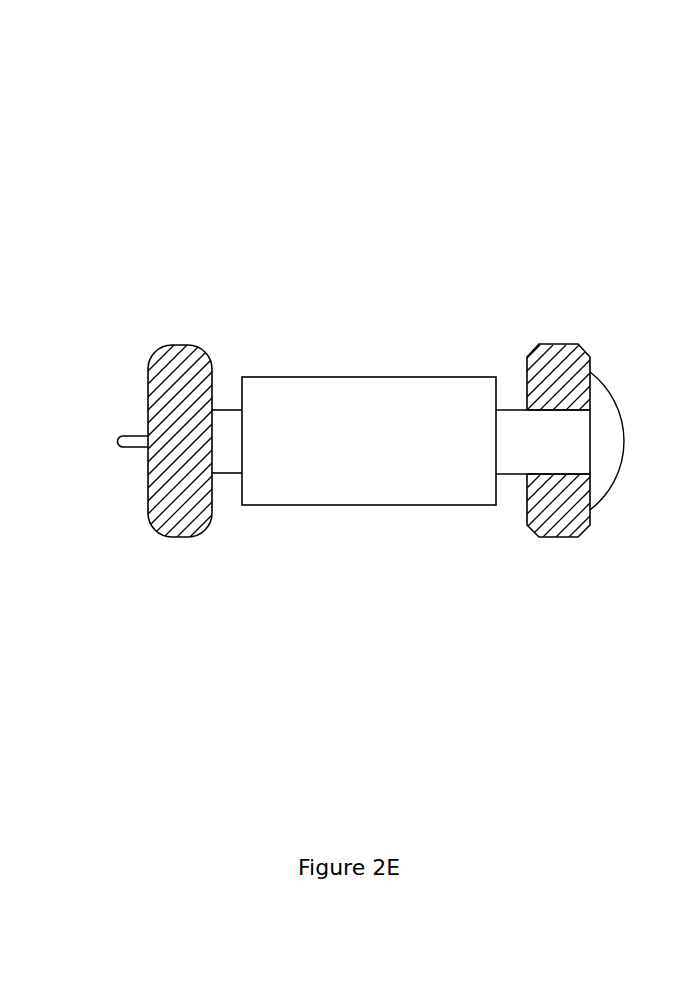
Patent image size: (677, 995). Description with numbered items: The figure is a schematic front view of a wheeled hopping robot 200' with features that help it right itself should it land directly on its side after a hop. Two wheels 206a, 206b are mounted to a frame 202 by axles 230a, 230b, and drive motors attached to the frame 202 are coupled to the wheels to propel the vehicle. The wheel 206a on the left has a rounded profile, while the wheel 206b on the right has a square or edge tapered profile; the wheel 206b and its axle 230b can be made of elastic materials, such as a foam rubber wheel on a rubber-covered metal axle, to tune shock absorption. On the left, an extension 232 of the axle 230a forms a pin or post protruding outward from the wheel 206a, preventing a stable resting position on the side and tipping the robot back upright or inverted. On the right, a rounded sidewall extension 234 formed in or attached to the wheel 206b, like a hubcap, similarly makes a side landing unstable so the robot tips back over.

The wheeled hopping robot 200' is at (576, 60).
The frame 202 is at (463, 416).
The wheel 206a is at (174, 522).
The wheel 206b is at (558, 522).
The axle 230a is at (220, 453).
The axle 230b is at (523, 465).
The extension 232 is at (131, 437).
The rounded sidewall extension 234 is at (602, 408).